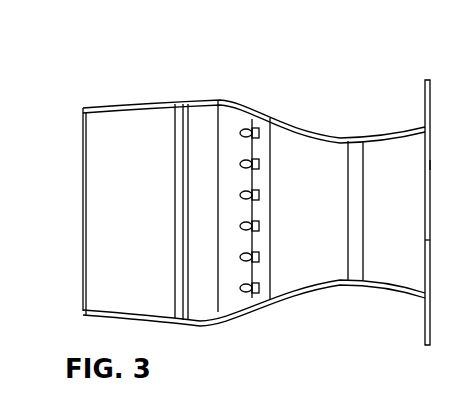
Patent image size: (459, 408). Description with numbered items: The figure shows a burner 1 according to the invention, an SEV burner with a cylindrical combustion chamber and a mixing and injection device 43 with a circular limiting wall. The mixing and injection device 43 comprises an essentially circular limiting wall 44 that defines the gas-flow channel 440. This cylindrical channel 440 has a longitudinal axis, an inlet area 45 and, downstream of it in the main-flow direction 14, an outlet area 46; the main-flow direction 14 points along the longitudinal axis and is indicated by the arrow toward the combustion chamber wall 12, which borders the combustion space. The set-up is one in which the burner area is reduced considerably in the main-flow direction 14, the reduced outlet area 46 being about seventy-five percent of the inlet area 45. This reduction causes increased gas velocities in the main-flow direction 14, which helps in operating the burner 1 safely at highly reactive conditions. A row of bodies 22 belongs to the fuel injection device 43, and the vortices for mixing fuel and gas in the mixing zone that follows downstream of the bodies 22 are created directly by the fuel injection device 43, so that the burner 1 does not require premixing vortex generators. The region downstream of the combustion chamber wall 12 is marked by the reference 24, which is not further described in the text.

The burner 1 is at (141, 70).
The combustion chamber wall 12 is at (426, 113).
The main-flow direction 14 is at (452, 204).
The bodies 22 is at (257, 221).
The downstream region 24 is at (444, 164).
The mixing and injection device 43 is at (237, 287).
The limiting wall 44 is at (320, 136).
The inlet area 45 is at (172, 188).
The outlet area 46 is at (426, 241).
The gas-flow channel 440 is at (298, 238).